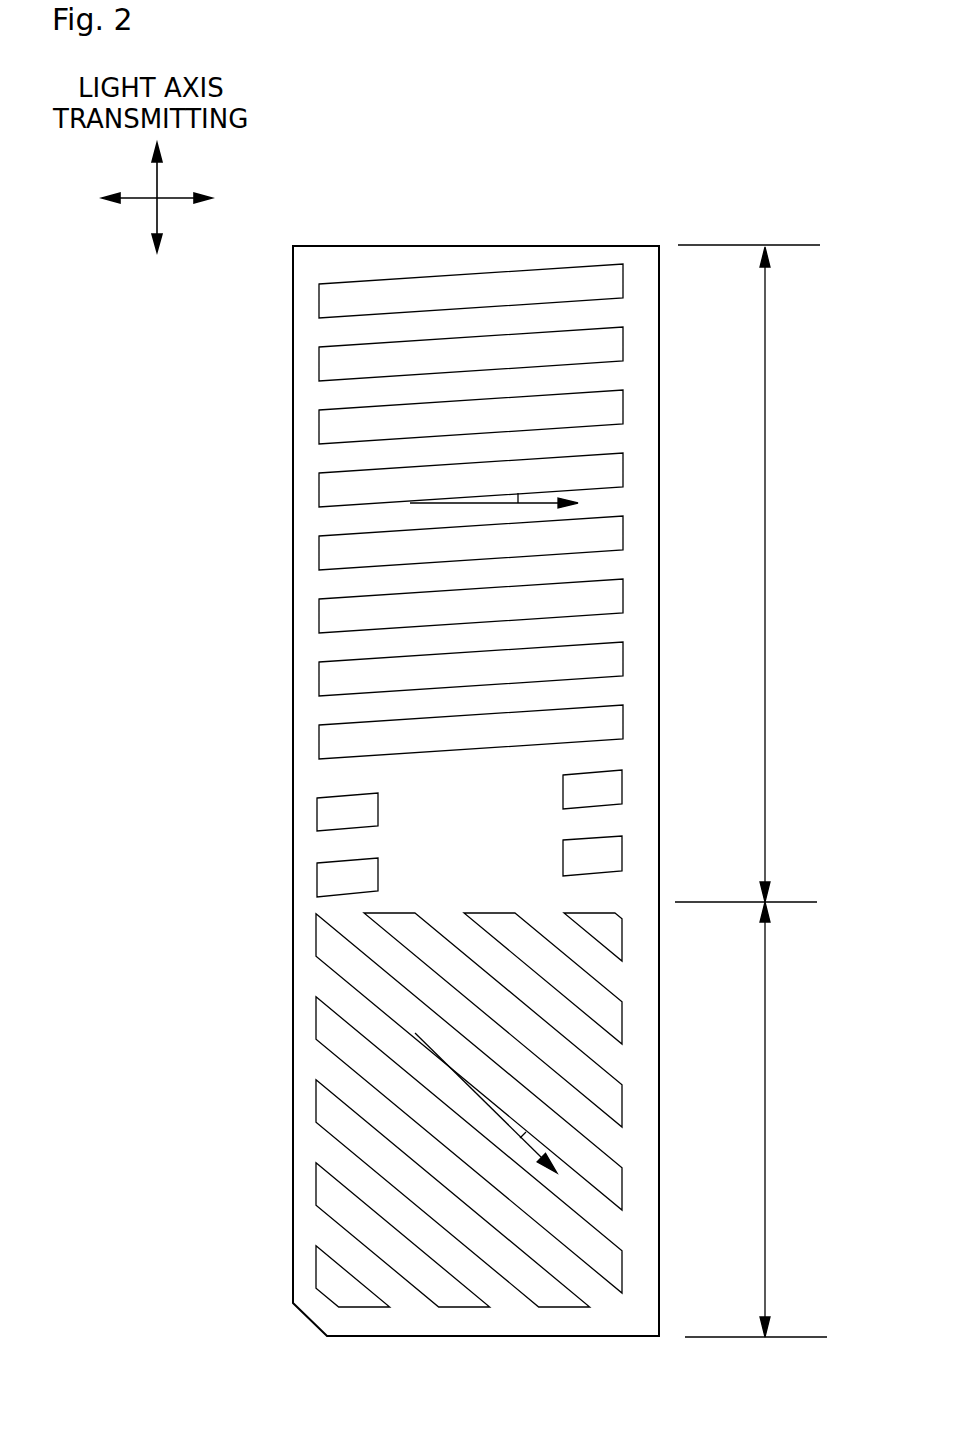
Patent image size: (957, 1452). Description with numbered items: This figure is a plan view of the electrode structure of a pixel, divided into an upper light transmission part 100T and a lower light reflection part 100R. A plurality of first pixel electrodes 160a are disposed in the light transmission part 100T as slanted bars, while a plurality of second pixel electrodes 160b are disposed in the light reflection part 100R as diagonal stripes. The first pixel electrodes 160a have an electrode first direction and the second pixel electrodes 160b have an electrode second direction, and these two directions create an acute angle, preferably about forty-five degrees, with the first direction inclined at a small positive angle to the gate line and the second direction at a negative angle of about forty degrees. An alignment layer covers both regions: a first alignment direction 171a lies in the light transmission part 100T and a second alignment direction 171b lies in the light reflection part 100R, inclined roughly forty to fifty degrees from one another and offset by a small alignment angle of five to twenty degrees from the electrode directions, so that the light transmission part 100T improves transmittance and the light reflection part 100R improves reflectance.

The first pixel electrodes 160a is at (459, 511).
The second pixel electrodes 160b is at (460, 1110).
The first alignment direction 171a is at (448, 505).
The second alignment direction 171b is at (498, 1118).
The light transmission part 100T is at (768, 573).
The light reflection part 100R is at (768, 1119).